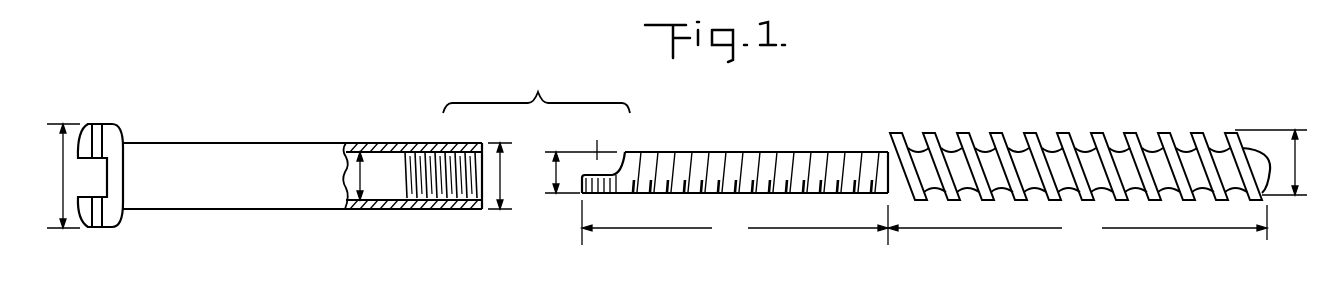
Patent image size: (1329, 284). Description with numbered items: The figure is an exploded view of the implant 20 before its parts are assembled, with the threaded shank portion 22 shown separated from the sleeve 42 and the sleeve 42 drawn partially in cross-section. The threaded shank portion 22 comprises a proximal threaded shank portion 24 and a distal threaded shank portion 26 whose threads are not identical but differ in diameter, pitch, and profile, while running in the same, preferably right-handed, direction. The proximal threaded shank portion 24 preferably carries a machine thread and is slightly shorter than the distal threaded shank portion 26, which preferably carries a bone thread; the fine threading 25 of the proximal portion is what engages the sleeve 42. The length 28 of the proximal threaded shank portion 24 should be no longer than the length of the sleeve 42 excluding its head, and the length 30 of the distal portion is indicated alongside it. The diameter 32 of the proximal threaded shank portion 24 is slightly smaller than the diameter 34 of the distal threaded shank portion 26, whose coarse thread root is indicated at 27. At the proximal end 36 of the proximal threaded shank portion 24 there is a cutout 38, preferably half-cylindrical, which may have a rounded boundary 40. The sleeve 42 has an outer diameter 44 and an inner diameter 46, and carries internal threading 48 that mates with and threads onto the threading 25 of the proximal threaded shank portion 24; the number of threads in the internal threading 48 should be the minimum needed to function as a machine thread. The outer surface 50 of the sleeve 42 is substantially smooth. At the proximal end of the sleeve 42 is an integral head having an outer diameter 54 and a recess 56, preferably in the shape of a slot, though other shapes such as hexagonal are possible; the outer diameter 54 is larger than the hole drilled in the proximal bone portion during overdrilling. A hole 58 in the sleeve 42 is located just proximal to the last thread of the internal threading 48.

The implant 20 is at (536, 90).
The threaded shank portion 22 is at (892, 243).
The proximal threaded shank portion 24 is at (817, 151).
The threading 25 is at (772, 151).
The distal threaded shank portion 26 is at (1093, 133).
The thread root 27 is at (1045, 146).
The length 28 is at (735, 222).
The length of coarse threaded portion 30 is at (1077, 222).
The diameter 32 is at (581, 172).
The diameter 34 is at (1272, 162).
The proximal end 36 is at (580, 194).
The cutout 38 is at (599, 139).
The rounded boundary 40 is at (620, 165).
The sleeve 42 is at (294, 212).
The outer diameter 44 is at (503, 176).
The inner diameter 46 is at (366, 176).
The internal threading 48 is at (410, 207).
The outer surface 50 is at (231, 148).
The outer diameter 54 is at (63, 176).
The recess 56 is at (100, 191).
The hole 58 is at (375, 207).